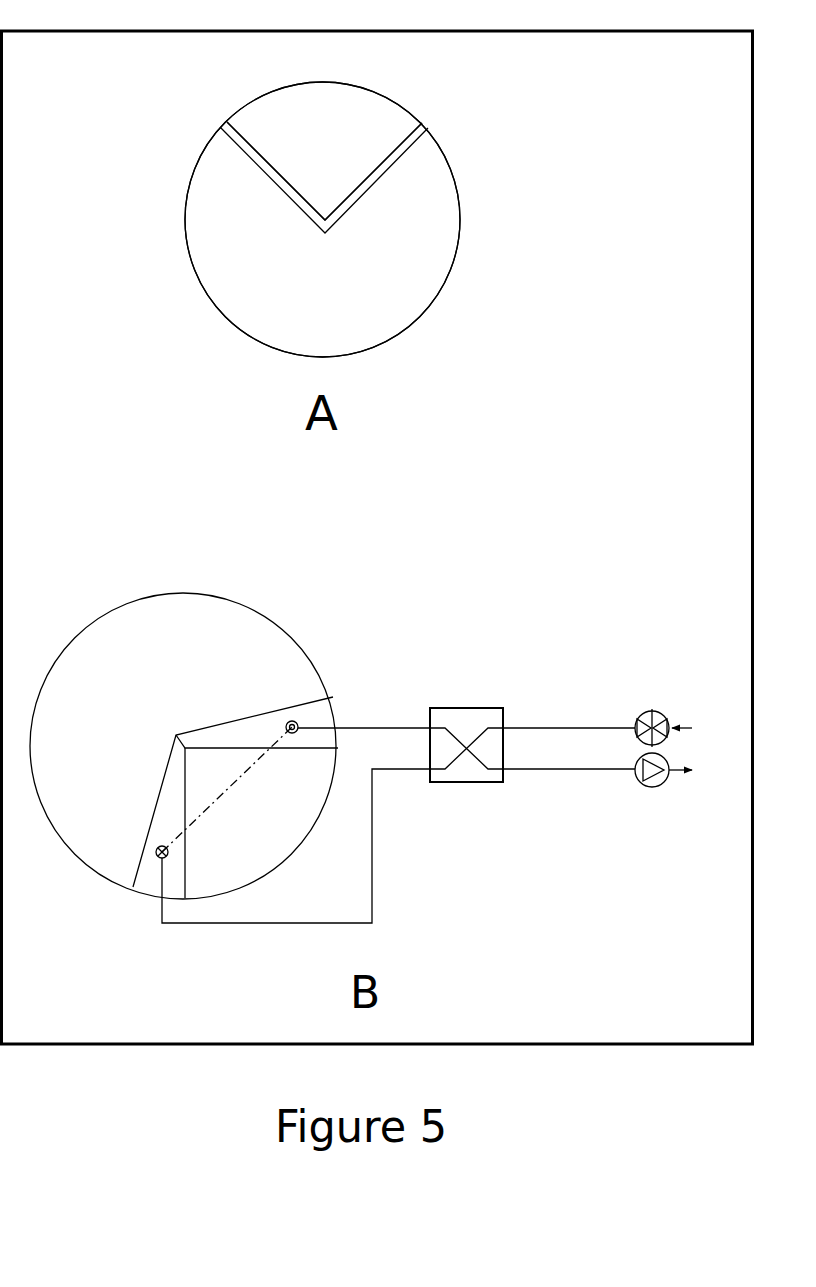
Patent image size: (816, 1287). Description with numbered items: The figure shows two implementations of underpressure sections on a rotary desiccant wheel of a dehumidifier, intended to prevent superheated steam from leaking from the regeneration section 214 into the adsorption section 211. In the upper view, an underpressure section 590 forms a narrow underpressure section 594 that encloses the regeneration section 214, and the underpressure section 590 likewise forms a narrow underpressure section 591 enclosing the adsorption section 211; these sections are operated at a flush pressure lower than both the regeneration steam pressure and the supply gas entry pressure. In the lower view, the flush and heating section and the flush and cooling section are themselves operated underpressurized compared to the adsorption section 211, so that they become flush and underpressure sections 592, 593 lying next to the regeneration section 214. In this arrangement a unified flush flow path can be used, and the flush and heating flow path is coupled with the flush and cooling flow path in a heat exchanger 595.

In FIG. 5A, the adsorption section 211 is at (333, 157).
In FIG. 5B, the adsorption section 211 is at (147, 637).
In FIG. 5A, the regeneration section 214 is at (322, 219).
In FIG. 5B, the regeneration section 214 is at (267, 855).
In FIG. 5A, the underpressure section 590 is at (216, 127).
In FIG. 5A, the narrow underpressure section 591 is at (400, 150).
In FIG. 5A, the narrow underpressure section 594 is at (324, 171).
In FIG. 5B, the flush and underpressure section 592 is at (156, 881).
In FIG. 5B, the flush and underpressure section 593 is at (321, 714).
In FIG. 5B, the heat exchanger 595 is at (466, 702).